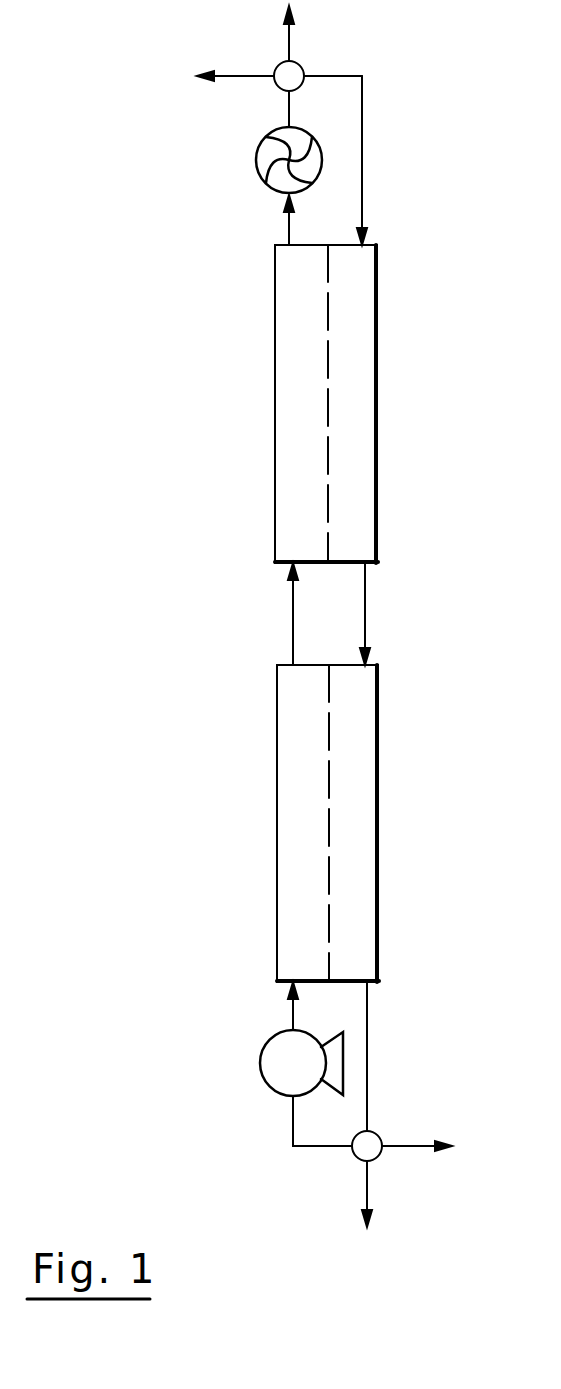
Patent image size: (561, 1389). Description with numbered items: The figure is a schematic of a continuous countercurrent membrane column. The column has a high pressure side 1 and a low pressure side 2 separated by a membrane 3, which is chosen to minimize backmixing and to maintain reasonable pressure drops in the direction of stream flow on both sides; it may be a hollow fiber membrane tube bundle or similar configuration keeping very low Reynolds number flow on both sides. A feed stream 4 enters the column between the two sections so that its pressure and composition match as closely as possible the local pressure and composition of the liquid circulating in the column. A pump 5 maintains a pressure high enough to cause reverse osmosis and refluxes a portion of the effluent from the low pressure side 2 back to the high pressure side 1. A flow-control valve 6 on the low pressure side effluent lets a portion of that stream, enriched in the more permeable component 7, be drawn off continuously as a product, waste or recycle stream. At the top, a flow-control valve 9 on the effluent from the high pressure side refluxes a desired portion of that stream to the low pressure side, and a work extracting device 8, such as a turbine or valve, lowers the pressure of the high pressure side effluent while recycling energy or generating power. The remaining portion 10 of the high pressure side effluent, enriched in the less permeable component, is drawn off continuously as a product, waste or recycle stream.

The high pressure side 1 is at (280, 324).
The low pressure side 2 is at (364, 320).
The membrane 3 is at (330, 731).
The feed stream 4 is at (280, 615).
The pump 5 is at (260, 1048).
The flow-control valve 6 is at (441, 1136).
The stream enriched in more permeable component 7 is at (376, 1212).
The work extracting device 8 is at (256, 158).
The flow-control valve 9 is at (213, 81).
The effluent stream from high pressure side 10 is at (297, 12).